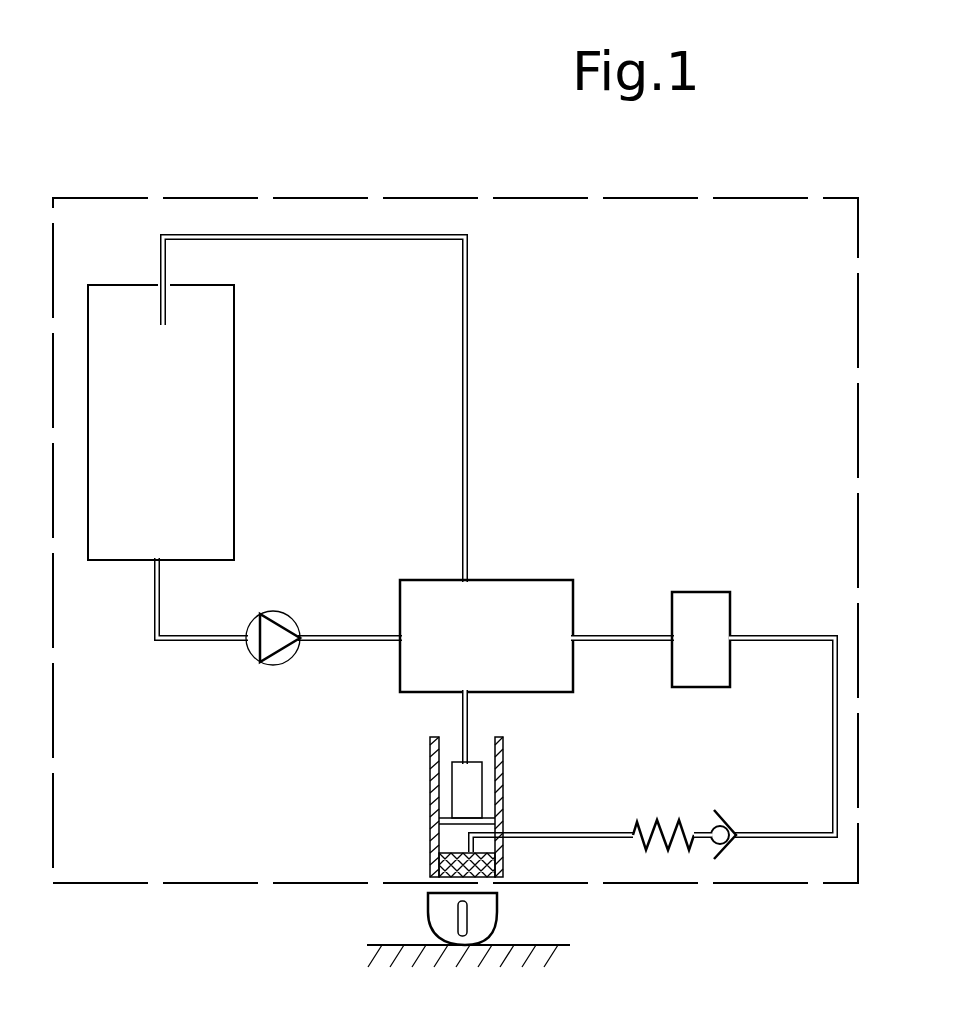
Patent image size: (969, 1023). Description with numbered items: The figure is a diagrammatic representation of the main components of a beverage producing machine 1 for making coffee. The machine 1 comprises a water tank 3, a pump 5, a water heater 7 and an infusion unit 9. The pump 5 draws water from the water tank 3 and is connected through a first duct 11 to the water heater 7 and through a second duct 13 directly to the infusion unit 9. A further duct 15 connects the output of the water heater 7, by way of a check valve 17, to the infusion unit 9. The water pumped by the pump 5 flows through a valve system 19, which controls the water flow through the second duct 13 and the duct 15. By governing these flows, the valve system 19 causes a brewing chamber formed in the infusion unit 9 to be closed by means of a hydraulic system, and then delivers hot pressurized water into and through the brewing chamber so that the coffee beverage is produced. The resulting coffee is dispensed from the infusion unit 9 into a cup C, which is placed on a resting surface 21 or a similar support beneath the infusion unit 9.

The beverage producing machine 1 is at (398, 183).
The water tank 3 is at (216, 401).
The pump 5 is at (285, 612).
The water heater 7 is at (700, 600).
The infusion unit 9 is at (506, 798).
The first duct 11 is at (614, 641).
The second duct 13 is at (461, 713).
The duct 15 is at (832, 723).
The check valve 17 is at (662, 824).
The valve system 19 is at (494, 578).
The resting surface 21 is at (540, 945).
The cup C is at (430, 901).